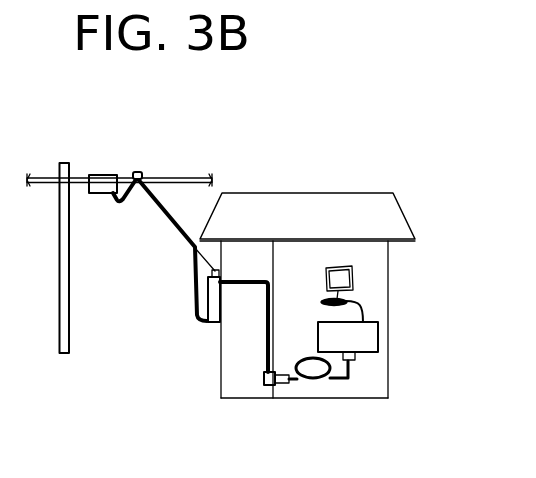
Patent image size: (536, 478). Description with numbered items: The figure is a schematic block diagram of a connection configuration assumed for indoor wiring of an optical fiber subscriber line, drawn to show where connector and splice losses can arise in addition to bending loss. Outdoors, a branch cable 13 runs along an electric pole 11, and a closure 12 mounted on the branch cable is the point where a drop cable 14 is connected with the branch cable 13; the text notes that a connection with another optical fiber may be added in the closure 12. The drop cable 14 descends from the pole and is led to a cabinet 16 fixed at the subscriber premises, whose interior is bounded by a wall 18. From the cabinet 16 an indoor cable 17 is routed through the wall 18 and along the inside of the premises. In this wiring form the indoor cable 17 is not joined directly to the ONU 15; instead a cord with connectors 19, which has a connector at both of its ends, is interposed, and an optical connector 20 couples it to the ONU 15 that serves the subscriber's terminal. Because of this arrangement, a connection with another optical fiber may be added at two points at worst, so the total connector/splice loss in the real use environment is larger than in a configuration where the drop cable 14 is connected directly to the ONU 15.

The electric pole 11 is at (62, 162).
The closure 12 is at (106, 174).
The branch cable 13 is at (173, 177).
The drop cable 14 is at (176, 232).
The ONU (Optical Network Unit) 15 is at (378, 337).
The cabinet 16 is at (200, 325).
The indoor cable 17 is at (245, 280).
The wall 18 is at (237, 388).
The cord with connectors 19 is at (342, 382).
The optical connector 20 is at (357, 357).